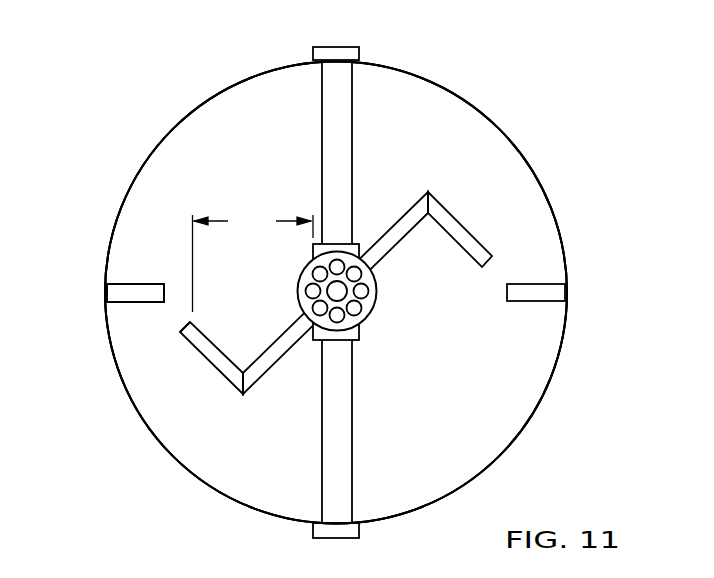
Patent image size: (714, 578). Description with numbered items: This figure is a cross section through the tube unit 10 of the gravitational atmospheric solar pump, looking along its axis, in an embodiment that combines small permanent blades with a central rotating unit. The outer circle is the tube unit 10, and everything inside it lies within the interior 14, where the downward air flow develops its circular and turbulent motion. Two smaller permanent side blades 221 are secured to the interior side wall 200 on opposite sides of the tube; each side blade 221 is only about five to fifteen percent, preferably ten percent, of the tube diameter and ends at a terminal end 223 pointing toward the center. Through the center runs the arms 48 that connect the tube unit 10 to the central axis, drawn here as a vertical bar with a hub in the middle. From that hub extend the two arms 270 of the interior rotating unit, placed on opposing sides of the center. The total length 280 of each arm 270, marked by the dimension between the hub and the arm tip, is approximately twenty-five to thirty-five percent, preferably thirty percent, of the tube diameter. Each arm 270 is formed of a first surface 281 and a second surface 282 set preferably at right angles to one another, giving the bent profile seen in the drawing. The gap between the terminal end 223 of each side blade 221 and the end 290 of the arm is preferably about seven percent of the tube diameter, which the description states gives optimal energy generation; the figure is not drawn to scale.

The tube unit 10 is at (470, 103).
The interior 14 is at (487, 148).
The interior side wall 200 is at (174, 130).
The arms 48 is at (321, 153).
The arms 270 is at (268, 283).
The total length 280 is at (253, 260).
The first surface 281 is at (214, 362).
The second surface 282 is at (241, 393).
The end of the arm 290 is at (183, 327).
The side blades 221 is at (133, 302).
The terminal end 223 is at (168, 286).